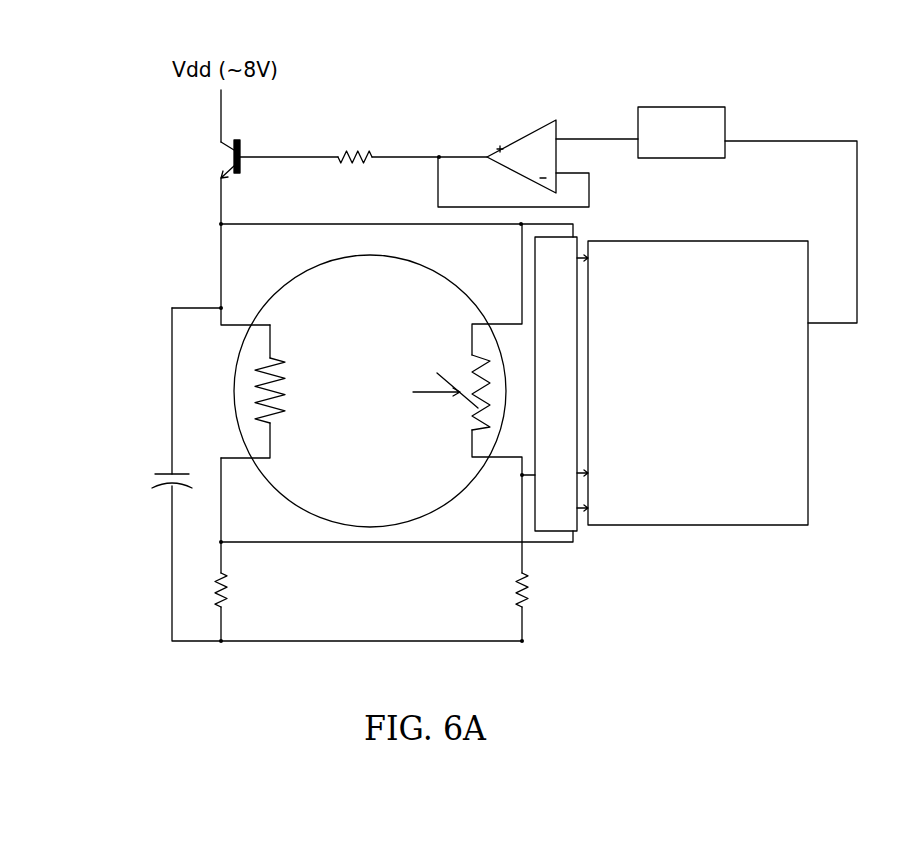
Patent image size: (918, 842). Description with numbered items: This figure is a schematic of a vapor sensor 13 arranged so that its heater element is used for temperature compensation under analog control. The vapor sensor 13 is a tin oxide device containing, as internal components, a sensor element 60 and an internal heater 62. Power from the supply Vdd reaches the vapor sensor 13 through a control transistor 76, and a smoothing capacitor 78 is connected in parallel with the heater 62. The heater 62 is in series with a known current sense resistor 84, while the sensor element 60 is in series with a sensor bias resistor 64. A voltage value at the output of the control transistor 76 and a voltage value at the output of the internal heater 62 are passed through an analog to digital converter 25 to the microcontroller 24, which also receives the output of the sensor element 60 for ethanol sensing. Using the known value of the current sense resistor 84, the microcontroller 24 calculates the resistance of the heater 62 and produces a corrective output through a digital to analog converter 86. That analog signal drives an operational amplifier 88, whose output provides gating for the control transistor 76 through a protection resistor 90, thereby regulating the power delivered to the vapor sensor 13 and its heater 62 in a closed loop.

The vapor sensor 13 is at (408, 488).
The microcontroller 24 is at (705, 525).
The analog to digital converter 25 is at (575, 531).
The sensor element 60 is at (462, 370).
The internal heater 62 is at (287, 378).
The sensor bias resistor 64 is at (530, 583).
The control transistor 76 is at (237, 140).
The smoothing capacitor 78 is at (158, 472).
The current sense resistor 84 is at (223, 592).
The digital to analog converter 86 is at (668, 107).
The operational amplifier 88 is at (520, 142).
The protection resistor 90 is at (352, 151).